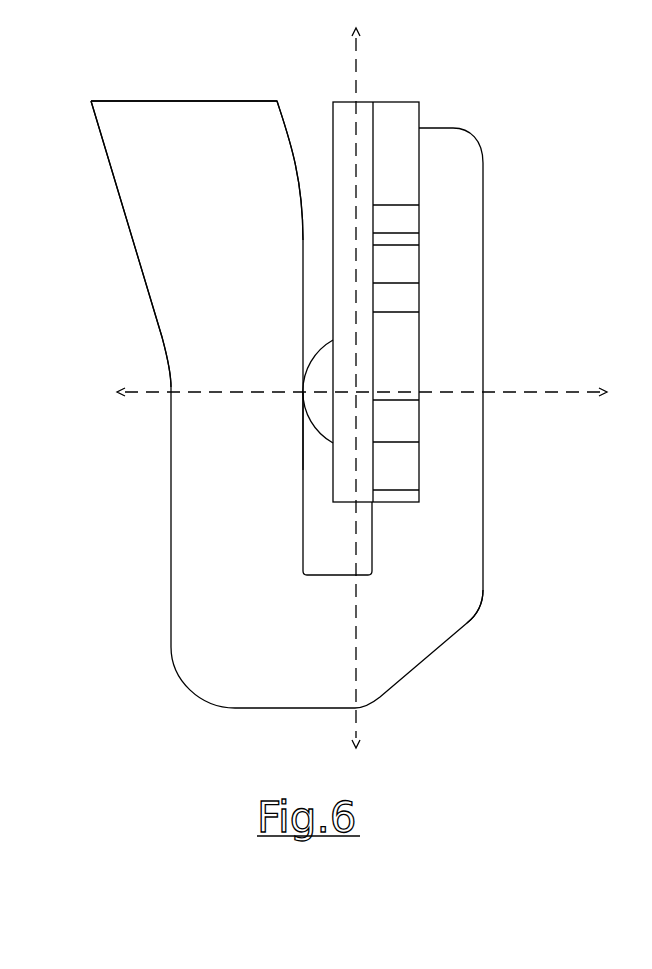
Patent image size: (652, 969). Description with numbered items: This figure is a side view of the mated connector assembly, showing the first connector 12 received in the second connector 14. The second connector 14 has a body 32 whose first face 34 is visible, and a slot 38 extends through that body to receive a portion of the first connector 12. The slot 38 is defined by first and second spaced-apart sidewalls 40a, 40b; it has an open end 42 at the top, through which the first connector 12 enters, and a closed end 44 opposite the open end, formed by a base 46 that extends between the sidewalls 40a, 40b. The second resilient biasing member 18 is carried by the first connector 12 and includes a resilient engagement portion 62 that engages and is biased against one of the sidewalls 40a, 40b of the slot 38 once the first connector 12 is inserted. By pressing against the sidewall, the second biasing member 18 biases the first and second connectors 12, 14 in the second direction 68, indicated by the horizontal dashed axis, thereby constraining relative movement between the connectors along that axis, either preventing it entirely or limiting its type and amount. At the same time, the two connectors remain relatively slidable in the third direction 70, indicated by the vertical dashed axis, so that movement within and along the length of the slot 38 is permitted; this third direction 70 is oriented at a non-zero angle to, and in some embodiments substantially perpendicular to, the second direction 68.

The first connector 12 is at (374, 102).
The second connector 14 is at (117, 196).
The second resilient biasing member 18 is at (332, 440).
The body 32 is at (482, 243).
The first face 34 is at (248, 258).
The slot 38 is at (312, 135).
The first sidewall 40a is at (370, 549).
The second sidewall 40b is at (302, 525).
The open end 42 is at (250, 92).
The closed end 44 is at (385, 595).
The base 46 is at (322, 578).
The resilient engagement portion 62 is at (303, 383).
The second direction 68 is at (553, 392).
The third direction 70 is at (356, 62).